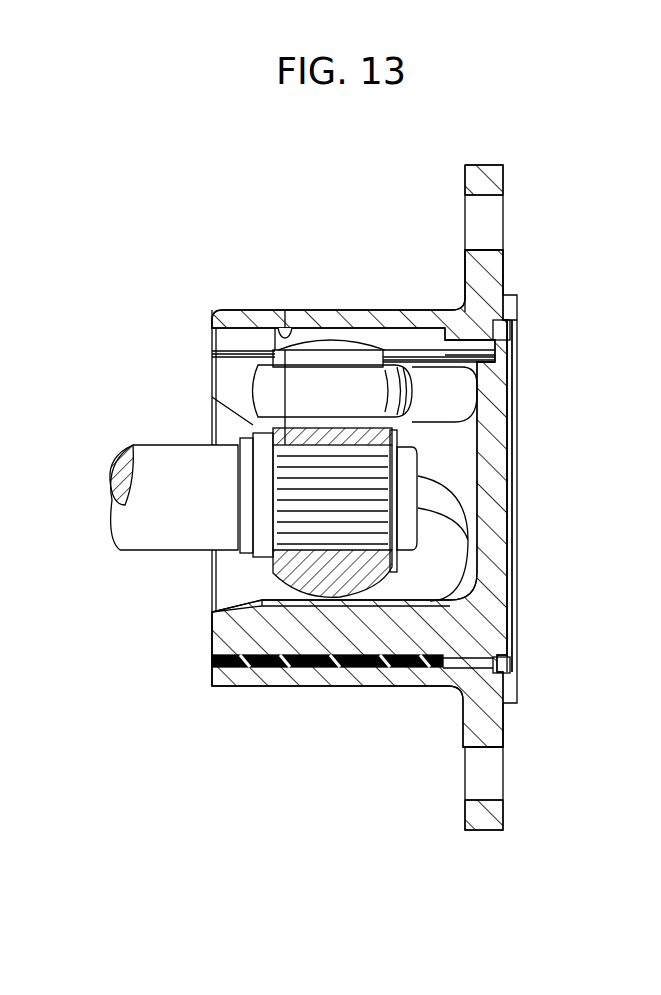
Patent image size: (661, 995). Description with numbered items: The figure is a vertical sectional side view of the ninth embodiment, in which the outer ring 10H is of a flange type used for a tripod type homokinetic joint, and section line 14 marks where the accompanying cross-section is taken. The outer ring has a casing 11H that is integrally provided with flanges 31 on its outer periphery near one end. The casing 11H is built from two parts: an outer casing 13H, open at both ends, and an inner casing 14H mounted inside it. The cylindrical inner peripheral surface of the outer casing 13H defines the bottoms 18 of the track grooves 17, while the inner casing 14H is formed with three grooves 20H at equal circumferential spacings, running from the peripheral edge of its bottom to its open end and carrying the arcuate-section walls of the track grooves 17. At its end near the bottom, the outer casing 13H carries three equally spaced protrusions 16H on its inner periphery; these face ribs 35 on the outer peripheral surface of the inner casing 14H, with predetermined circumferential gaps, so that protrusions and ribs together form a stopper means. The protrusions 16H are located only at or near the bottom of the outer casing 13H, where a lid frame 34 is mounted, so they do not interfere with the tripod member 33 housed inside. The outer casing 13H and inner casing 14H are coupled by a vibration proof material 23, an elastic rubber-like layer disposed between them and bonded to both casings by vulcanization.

The outer ring 10H is at (218, 290).
The casing 11H is at (415, 300).
The outer casing 13H is at (330, 312).
The section line E-E 14 is at (166, 172).
The inner casing 14H is at (315, 640).
The protrusions 16H is at (480, 337).
The track grooves 17 is at (237, 343).
The bottoms of track grooves 18 is at (272, 332).
The grooves 20H is at (238, 382).
The vibration proof material 23 is at (385, 669).
The flanges 31 is at (494, 177).
The tripod member 33 is at (262, 568).
The lid frame 34 is at (512, 608).
The ribs 35 is at (490, 346).